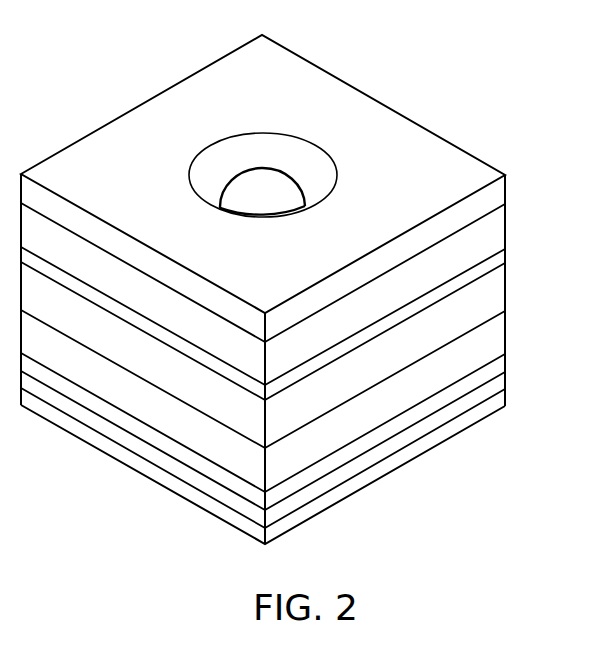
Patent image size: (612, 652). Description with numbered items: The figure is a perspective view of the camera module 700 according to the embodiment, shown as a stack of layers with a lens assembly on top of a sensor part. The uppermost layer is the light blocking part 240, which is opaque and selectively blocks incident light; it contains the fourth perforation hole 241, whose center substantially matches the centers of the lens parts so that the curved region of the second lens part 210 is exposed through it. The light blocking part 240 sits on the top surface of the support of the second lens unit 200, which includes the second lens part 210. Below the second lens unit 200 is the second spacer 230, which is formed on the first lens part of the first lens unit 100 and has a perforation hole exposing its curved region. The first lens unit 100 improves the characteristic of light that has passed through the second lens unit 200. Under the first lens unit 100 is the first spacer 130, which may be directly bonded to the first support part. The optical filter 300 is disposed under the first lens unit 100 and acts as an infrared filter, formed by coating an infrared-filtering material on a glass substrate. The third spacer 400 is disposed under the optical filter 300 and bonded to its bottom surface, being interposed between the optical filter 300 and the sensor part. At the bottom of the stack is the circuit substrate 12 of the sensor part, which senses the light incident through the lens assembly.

The display device 700 is at (108, 138).
The light blocking part 240 is at (502, 195).
The fourth perforation hole 241 is at (244, 152).
The second lens part 210 is at (268, 185).
The second lens unit 200 is at (503, 235).
The second spacer 230 is at (504, 257).
The first lens unit 100 is at (506, 277).
The first spacer 130 is at (500, 327).
The optical filter 300 is at (500, 368).
The third spacer 400 is at (500, 382).
The circuit substrate 12 is at (500, 407).